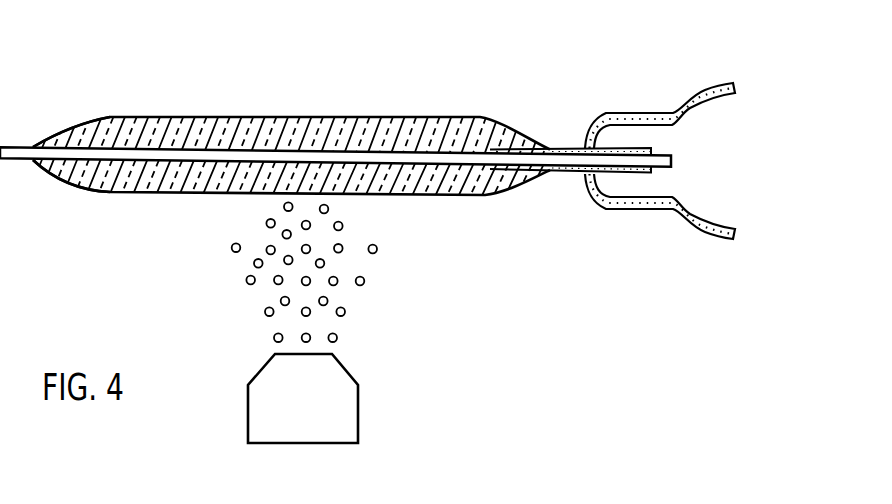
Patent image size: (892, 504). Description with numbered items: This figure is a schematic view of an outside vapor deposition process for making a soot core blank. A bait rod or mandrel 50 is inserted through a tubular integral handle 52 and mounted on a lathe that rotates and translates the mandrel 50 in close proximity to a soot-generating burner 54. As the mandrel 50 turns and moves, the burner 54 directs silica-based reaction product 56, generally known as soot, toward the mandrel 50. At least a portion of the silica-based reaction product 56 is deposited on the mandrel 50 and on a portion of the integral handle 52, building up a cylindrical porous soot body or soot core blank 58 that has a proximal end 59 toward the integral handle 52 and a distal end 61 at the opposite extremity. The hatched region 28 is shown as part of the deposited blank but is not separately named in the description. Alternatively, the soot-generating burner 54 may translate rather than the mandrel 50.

The soot core blank 58 is at (152, 100).
The distal end 61 is at (52, 132).
The balloon wall coating 28 is at (248, 131).
The mandrel 50 is at (344, 155).
The proximal end 59 is at (512, 147).
The integral handle 52 is at (657, 226).
The silica-based reaction product 56 is at (402, 311).
The soot-generating burner 54 is at (358, 403).